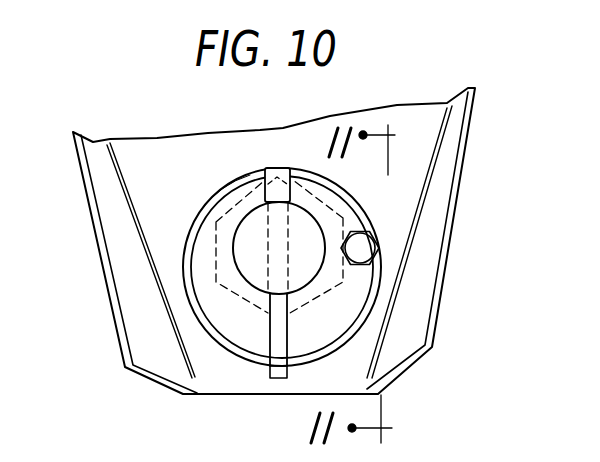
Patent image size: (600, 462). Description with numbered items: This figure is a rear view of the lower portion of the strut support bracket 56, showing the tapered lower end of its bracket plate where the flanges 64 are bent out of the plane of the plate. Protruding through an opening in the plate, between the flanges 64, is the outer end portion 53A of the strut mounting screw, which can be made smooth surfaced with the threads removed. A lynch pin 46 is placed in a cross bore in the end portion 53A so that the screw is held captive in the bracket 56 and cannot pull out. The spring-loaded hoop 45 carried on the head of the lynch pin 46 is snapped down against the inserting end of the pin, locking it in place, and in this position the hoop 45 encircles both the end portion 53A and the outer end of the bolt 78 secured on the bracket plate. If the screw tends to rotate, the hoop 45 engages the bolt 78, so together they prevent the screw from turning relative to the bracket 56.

The support bracket 56 is at (418, 122).
The flanges 64 is at (117, 282).
The spring-loaded hoop 45 is at (218, 357).
The outer end portion of the screw 53A is at (252, 238).
The lynch pin 46 is at (257, 345).
The bolt 78 is at (363, 247).